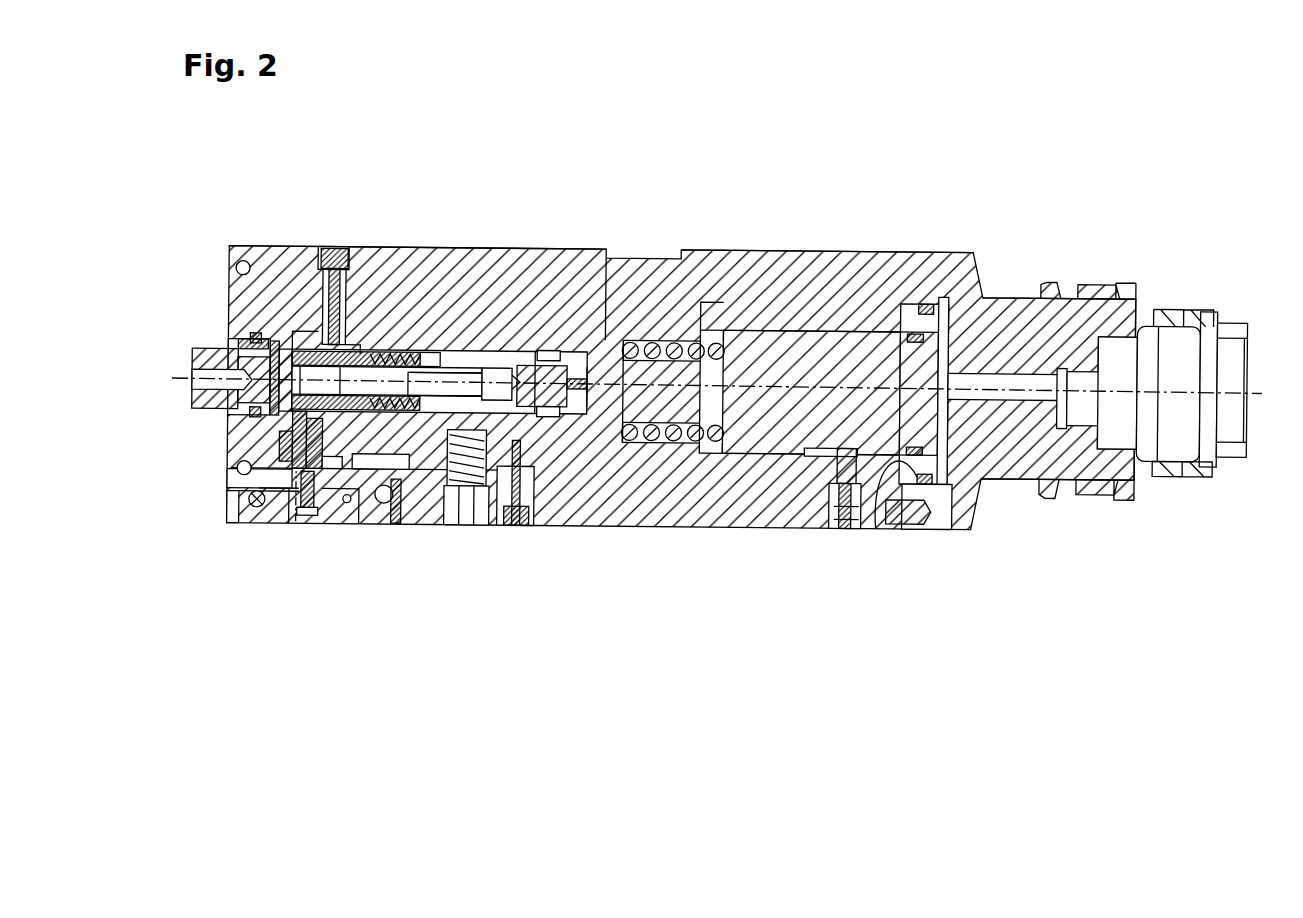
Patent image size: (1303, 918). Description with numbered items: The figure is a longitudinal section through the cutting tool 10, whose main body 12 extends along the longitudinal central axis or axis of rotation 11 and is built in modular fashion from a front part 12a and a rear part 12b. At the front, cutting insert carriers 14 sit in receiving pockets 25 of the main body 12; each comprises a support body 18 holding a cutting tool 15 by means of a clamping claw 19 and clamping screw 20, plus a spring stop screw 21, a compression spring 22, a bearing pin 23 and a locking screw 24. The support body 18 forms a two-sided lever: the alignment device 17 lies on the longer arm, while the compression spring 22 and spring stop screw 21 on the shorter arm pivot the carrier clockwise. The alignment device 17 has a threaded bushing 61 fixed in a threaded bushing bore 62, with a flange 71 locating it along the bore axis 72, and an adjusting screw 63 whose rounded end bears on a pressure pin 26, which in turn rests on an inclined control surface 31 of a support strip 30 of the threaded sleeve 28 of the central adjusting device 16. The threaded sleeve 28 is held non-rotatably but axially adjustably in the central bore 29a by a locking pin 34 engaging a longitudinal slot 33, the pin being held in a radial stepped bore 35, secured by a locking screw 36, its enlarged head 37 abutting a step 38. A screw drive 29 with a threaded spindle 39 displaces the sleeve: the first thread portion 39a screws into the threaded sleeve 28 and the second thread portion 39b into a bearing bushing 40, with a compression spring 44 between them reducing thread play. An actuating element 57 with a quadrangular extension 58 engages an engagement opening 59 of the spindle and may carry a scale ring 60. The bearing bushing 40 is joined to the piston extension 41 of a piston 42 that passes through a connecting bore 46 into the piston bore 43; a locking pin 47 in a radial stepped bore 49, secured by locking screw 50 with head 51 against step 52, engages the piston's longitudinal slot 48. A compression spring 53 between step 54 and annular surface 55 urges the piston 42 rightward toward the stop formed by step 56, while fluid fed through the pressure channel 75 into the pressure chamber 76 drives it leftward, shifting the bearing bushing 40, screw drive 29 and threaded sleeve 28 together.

The cutting tool 10 is at (738, 172).
The longitudinal central axis or axis of rotation 11 is at (1177, 385).
The main body 12 is at (585, 500).
The front part 12a is at (840, 268).
The rear part 12b is at (920, 285).
The cutting insert carrier 14 is at (348, 503).
The cutting tool 15 is at (235, 515).
The central adjusting device 16 is at (535, 428).
The alignment device 17 is at (330, 522).
The support body 18 is at (455, 500).
The clamping claw 19 is at (238, 522).
The clamping screw 20 is at (258, 508).
The spring stop screw 21 is at (483, 522).
The compression spring 22 is at (517, 522).
The bearing pin 23 is at (385, 503).
The locking screw 24 is at (398, 522).
The receiving pocket 25 is at (258, 460).
The pressure pin 26 is at (298, 428).
The threaded sleeve 28 is at (280, 345).
The screw drive 29 is at (480, 362).
The central bore 29a is at (515, 375).
The support strip 30 is at (250, 400).
The control surface 31 is at (265, 405).
The axial longitudinal slot 33 is at (262, 338).
The locking pin 34 is at (285, 320).
The radial stepped bore 35 is at (300, 335).
The locking screw 36 is at (340, 260).
The head 37 is at (330, 310).
The step 38 is at (345, 350).
The threaded spindle 39 is at (525, 362).
The first thread portion 39a is at (405, 352).
The second thread portion 39b is at (480, 370).
The bearing bushing 40 is at (590, 362).
The piston extension 41 is at (620, 336).
The piston 42 is at (780, 335).
The piston bore 43 is at (786, 330).
The compression spring 44 is at (452, 330).
The connecting bore 46 is at (660, 336).
The locking pin 47 is at (943, 478).
The axial longitudinal slot 48 is at (812, 450).
The radial stepped bore 49 is at (838, 462).
The locking screw 50 is at (855, 515).
The head 51 is at (842, 522).
The step 52 is at (905, 520).
The compression spring 53 is at (650, 440).
The step 54 is at (618, 440).
The annular surface 55 is at (702, 448).
The step 56 is at (720, 325).
The actuating element 57 is at (200, 356).
The extension 58 is at (285, 360).
The engagement opening 59 is at (437, 352).
The scale ring 60 is at (232, 340).
The threaded bushing 61 is at (290, 515).
The threaded bushing bore 62 is at (290, 495).
The adjusting screw 63 is at (312, 520).
The flange 71 is at (297, 473).
The bore axis 72 is at (297, 522).
The pressure channel 75 is at (1030, 395).
The pressure chamber 76 is at (948, 420).